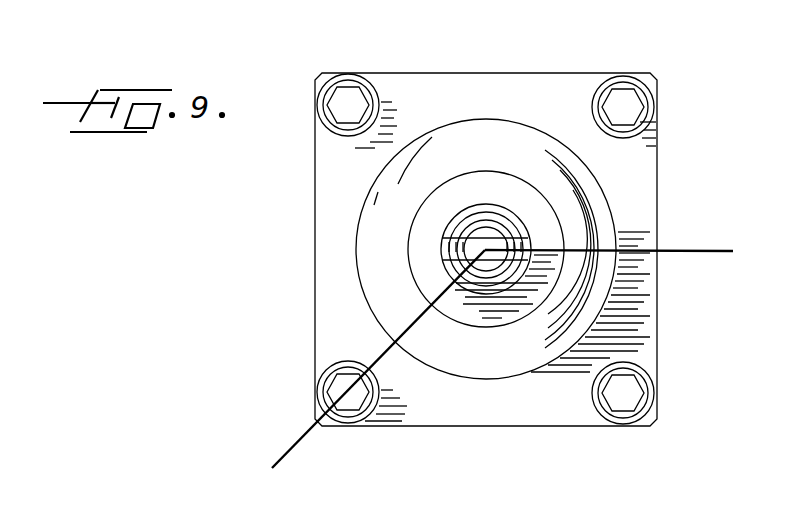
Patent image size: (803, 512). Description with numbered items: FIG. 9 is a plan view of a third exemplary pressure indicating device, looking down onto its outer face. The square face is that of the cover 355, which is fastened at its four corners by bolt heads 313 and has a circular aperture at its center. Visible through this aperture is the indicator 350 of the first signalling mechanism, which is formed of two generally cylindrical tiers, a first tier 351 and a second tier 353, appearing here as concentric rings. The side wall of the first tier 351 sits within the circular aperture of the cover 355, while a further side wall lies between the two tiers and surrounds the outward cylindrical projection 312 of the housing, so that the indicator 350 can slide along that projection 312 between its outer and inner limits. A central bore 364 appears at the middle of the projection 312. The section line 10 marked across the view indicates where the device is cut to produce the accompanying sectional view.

The bolt head 313 is at (635, 103).
The cover 355 is at (498, 123).
The indicator 350 is at (472, 182).
The second tier 353 is at (484, 204).
The outward cylindrical projection 312 is at (501, 220).
The central bore 364 is at (529, 242).
The first tier 351 is at (442, 251).
The section line 10- 10 is at (722, 222).